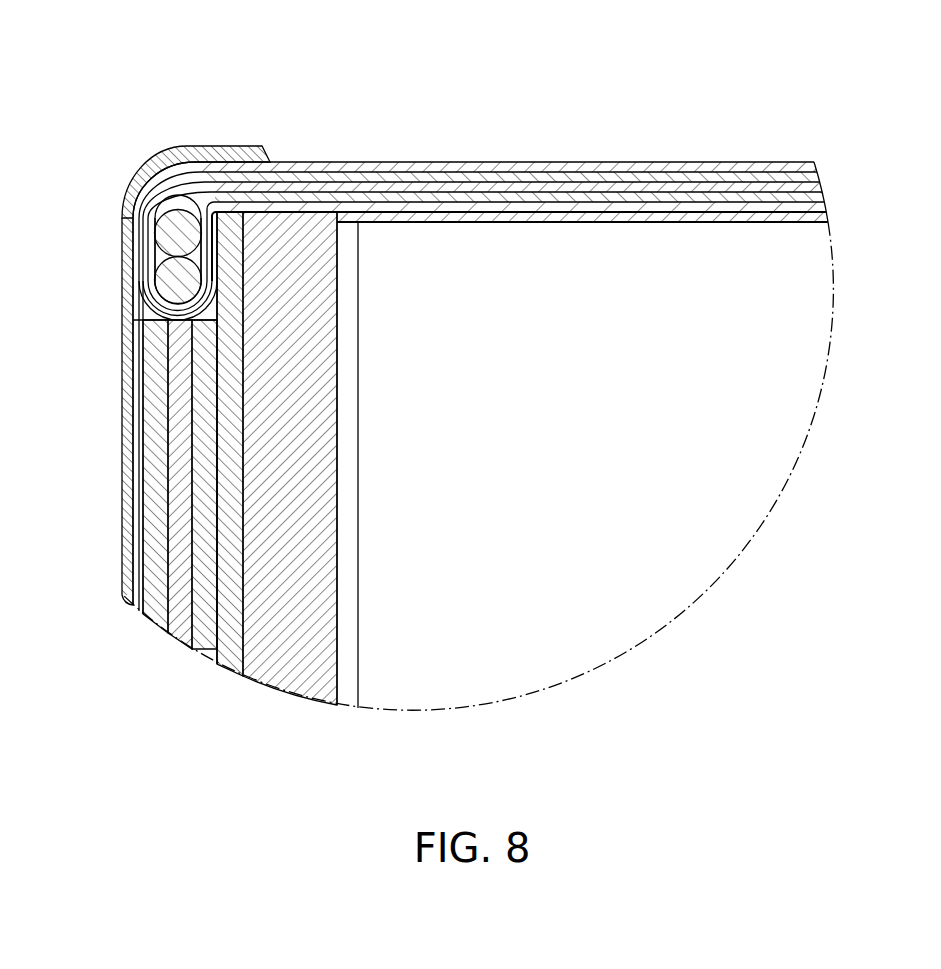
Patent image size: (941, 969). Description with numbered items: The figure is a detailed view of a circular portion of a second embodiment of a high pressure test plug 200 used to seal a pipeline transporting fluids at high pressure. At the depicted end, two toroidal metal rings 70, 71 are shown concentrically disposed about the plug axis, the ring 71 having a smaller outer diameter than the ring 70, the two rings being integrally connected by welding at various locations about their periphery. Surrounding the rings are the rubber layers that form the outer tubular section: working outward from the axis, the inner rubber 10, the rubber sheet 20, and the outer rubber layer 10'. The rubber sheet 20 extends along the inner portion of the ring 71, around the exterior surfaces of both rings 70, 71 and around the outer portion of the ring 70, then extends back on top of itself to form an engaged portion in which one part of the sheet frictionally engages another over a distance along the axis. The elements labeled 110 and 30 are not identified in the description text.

The high pressure test plug 200 is at (802, 98).
The cover member 110 is at (110, 197).
The metal ring 70 is at (185, 200).
The metal ring 71 is at (187, 273).
The outer rubber layer 10' is at (473, 155).
The rubber sheet 20 is at (575, 190).
The inner rubber 10 is at (519, 241).
The support layer 30 is at (587, 228).